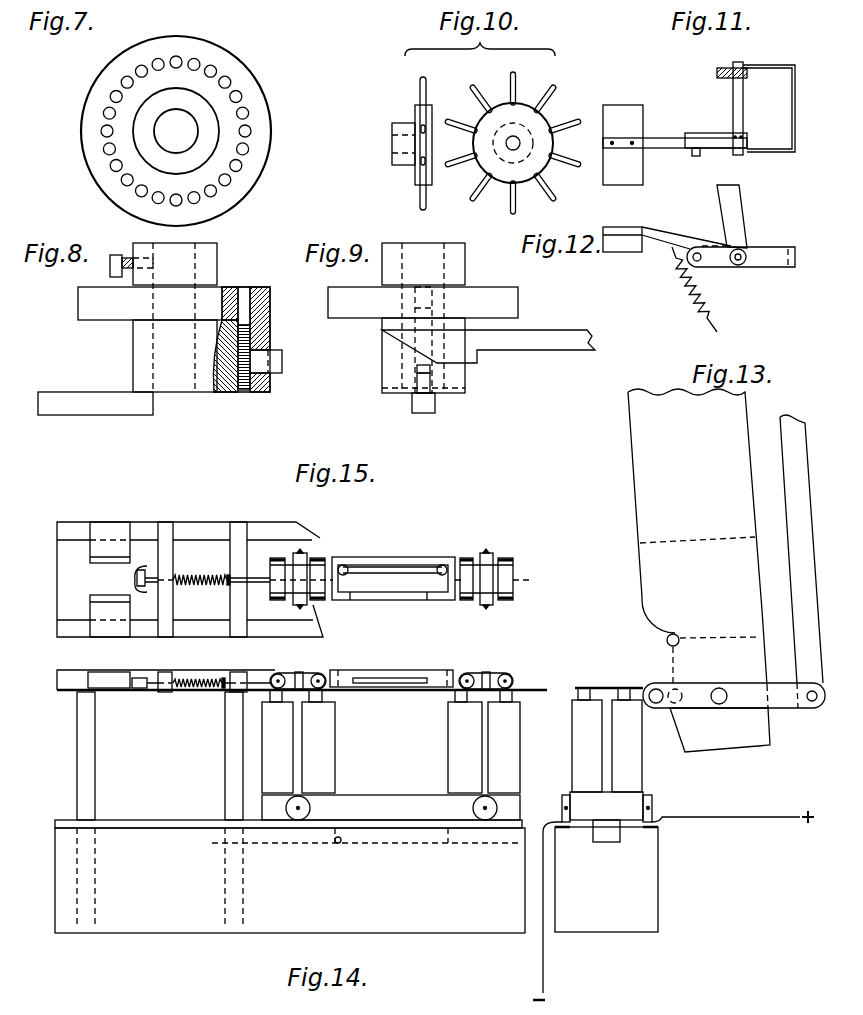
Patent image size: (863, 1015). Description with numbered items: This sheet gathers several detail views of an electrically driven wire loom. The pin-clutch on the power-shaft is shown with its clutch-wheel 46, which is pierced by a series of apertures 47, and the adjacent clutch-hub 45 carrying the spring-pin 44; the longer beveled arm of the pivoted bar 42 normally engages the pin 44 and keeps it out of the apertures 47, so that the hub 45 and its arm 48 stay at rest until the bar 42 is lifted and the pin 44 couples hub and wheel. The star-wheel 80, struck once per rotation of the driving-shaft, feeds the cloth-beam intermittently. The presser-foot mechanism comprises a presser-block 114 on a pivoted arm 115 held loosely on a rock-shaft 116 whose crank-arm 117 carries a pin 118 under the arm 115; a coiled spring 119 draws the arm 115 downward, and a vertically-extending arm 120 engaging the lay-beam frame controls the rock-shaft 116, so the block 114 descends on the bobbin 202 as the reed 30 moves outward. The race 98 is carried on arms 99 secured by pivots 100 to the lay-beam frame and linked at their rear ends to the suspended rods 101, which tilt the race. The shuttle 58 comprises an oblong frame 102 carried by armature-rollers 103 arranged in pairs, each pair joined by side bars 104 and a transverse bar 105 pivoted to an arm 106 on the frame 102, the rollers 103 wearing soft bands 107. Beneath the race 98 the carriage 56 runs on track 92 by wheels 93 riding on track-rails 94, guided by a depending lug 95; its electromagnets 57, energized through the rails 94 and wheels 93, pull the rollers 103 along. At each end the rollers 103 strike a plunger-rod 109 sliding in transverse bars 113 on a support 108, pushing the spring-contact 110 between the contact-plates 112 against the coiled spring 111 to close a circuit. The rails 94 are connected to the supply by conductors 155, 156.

In FIG. 7, the clutch-wheel 46 is at (187, 131).
In FIG. 8, the clutch-wheel 46 is at (150, 317).
In FIG. 9, the clutch-wheel 46 is at (423, 318).
In FIG. 7, the apertures 47 is at (251, 130).
In FIG. 8, the bar 42 is at (270, 333).
In FIG. 9, the bar 42 is at (488, 346).
In FIG. 8, the spring-pin 44 is at (282, 365).
In FIG. 9, the spring-pin 44 is at (417, 378).
In FIG. 8, the clutch-hub 45 is at (206, 388).
In FIG. 9, the clutch-hub 45 is at (467, 378).
In FIG. 8, the arm 48 is at (103, 408).
In FIG. 9, the arm 48 is at (430, 413).
In FIG. 10, the star-wheel 80 is at (485, 143).
In FIG. 11, the presser-block 114 is at (623, 134).
In FIG. 12, the presser-block 114 is at (622, 250).
In FIG. 11, the pivoted arm 115 is at (672, 148).
In FIG. 12, the pivoted arm 115 is at (682, 232).
In FIG. 11, the rock-shaft 116 is at (748, 112).
In FIG. 12, the rock-shaft 116 is at (747, 252).
In FIG. 11, the crank-arm 117 is at (704, 133).
In FIG. 12, the crank-arm 117 is at (713, 268).
In FIG. 11, the pin 118 is at (696, 157).
In FIG. 12, the pin 118 is at (698, 252).
In FIG. 12, the coiled spring 119 is at (689, 296).
In FIG. 11, the vertically-extending arm 120 is at (716, 72).
In FIG. 12, the vertically-extending arm 120 is at (740, 200).
In FIG. 13, the suspended pivoted rod 101 is at (795, 423).
In FIG. 13, the reed 30 is at (678, 665).
In FIG. 13, the arm 99 is at (795, 708).
In FIG. 13, the pivot 100 is at (718, 705).
In FIG. 15, the support 108 is at (65, 605).
In FIG. 14, the support 108 is at (68, 684).
In FIG. 15, the contact-plate 112 is at (90, 560).
In FIG. 14, the contact-plate 112 is at (97, 672).
In FIG. 15, the transverse bar 113 is at (164, 527).
In FIG. 14, the transverse bar 113 is at (162, 694).
In FIG. 15, the spring-contact 110 is at (138, 592).
In FIG. 14, the spring-contact 110 is at (140, 690).
In FIG. 15, the coiled spring 111 is at (195, 574).
In FIG. 14, the coiled spring 111 is at (203, 690).
In FIG. 15, the plunger-rod 109 is at (250, 583).
In FIG. 15, the band 107 is at (270, 560).
In FIG. 15, the armature-roller 103 is at (277, 590).
In FIG. 14, the armature-roller 103 is at (277, 674).
In FIG. 15, the side bar 104 is at (303, 552).
In FIG. 14, the side bar 104 is at (299, 672).
In FIG. 15, the transverse bar 105 is at (312, 606).
In FIG. 14, the transverse bar 105 is at (295, 692).
In FIG. 15, the shuttle 58 is at (393, 567).
In FIG. 14, the shuttle 58 is at (391, 669).
In FIG. 15, the bobbin 202 is at (422, 565).
In FIG. 15, the arm 106 is at (338, 576).
In FIG. 14, the arm 106 is at (325, 672).
In FIG. 15, the oblong frame 102 is at (437, 600).
In FIG. 14, the electromagnet 57 is at (452, 740).
In FIG. 14, the carriage 56 is at (452, 806).
In FIG. 14, the wheel 93 is at (311, 808).
In FIG. 14, the track-rail 94 is at (187, 822).
In FIG. 14, the depending lug 95 is at (338, 845).
In FIG. 14, the track 92 is at (356, 880).
In FIG. 14, the race 98 is at (601, 688).
In FIG. 14, the conductor 155 is at (733, 823).
In FIG. 14, the conductor 156 is at (543, 962).